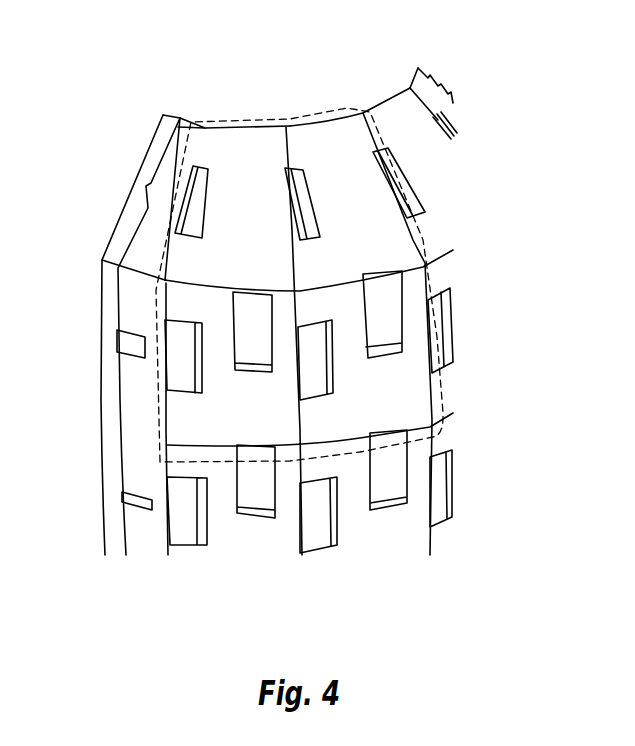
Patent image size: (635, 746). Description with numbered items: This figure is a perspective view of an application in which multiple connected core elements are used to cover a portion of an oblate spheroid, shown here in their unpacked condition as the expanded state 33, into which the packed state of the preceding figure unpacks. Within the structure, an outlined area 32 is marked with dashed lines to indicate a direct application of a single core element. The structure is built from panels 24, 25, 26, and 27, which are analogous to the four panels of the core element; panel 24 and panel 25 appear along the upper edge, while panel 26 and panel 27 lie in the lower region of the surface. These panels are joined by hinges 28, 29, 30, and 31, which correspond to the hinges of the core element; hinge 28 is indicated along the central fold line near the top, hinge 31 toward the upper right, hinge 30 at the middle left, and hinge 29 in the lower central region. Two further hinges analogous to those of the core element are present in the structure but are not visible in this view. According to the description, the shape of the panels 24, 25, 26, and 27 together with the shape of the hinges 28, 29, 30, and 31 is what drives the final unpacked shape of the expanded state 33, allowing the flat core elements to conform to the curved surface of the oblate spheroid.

The panel 24 is at (263, 137).
The panel 25 is at (340, 128).
The panel 26 is at (197, 413).
The panel 27 is at (338, 413).
The hinge 28 is at (300, 199).
The hinge 29 is at (313, 360).
The hinge 30 is at (253, 337).
The hinge 31 is at (383, 295).
The outlined area 32 is at (357, 107).
The expanded state 33 is at (523, 78).